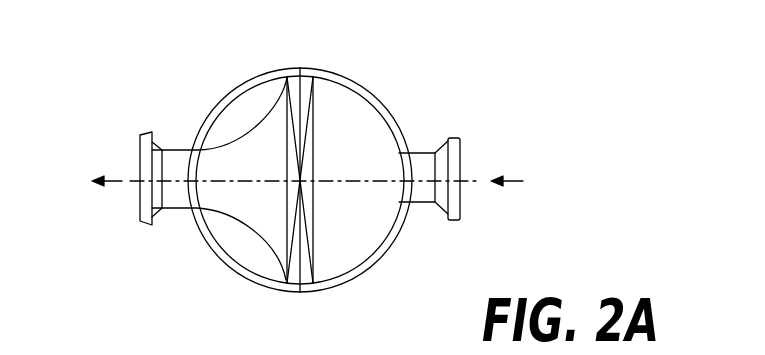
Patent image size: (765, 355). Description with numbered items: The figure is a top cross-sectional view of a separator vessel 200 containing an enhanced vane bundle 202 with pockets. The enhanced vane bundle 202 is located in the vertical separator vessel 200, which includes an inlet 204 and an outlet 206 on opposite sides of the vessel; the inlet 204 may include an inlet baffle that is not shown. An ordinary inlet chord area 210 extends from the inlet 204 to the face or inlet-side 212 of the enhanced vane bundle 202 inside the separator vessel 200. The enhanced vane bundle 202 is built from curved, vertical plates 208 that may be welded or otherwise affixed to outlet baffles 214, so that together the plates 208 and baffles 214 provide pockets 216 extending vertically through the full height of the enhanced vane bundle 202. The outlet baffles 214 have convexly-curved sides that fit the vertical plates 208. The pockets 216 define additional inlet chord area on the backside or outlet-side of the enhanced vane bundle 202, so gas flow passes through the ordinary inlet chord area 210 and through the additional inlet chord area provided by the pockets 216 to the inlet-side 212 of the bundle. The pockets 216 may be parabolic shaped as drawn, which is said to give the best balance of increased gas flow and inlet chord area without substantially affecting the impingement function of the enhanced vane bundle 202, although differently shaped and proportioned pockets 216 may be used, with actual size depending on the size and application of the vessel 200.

The separator vessel 200 is at (106, 90).
The enhanced vane bundle 202 is at (298, 78).
The inlet 204 is at (421, 152).
The outlet 206 is at (140, 166).
The curved vertical plates 208 is at (247, 147).
The ordinary inlet chord area 210 is at (350, 137).
The inlet-side of enhanced vane bundle 212 is at (329, 205).
The outlet baffles 214 is at (248, 193).
The pockets 216 is at (225, 128).